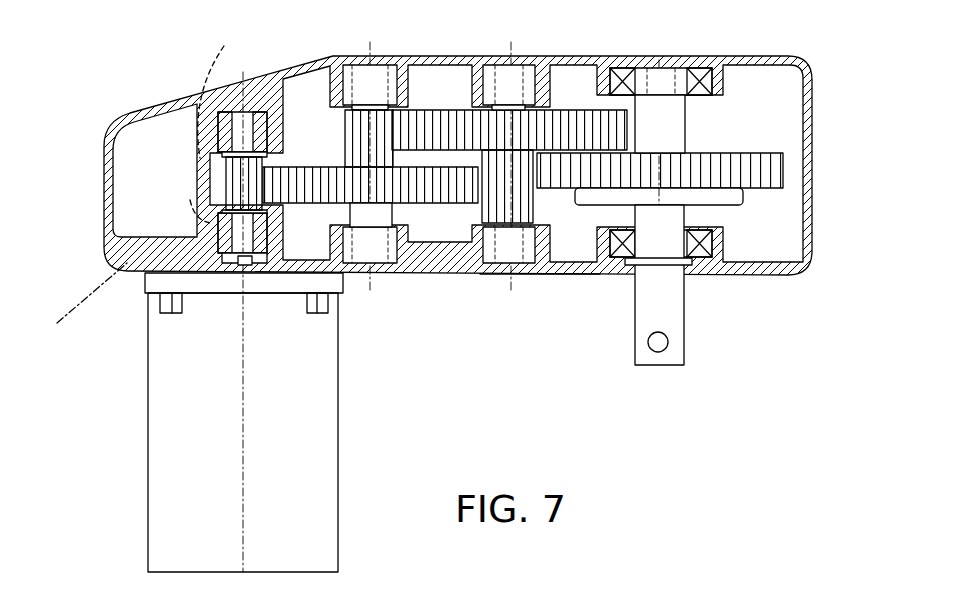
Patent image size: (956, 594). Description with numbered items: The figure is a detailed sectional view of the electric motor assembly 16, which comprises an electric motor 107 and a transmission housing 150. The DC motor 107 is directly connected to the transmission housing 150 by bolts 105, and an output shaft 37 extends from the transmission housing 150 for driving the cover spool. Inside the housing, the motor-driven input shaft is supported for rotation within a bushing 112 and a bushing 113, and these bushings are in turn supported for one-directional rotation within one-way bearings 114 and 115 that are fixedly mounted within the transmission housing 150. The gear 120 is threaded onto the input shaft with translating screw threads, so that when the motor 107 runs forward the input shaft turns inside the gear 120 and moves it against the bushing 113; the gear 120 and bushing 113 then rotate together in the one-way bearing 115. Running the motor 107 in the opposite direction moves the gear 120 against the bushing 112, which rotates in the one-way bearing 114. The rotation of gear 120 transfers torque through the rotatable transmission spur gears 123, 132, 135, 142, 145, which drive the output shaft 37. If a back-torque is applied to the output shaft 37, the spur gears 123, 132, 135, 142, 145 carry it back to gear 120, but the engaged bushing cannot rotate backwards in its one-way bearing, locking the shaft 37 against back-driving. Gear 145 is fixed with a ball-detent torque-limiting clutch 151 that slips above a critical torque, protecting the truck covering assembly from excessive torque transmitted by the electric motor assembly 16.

The electric motor assembly 16 is at (540, 297).
The output shaft 37 is at (670, 302).
The bolts 105 is at (170, 313).
The electric motor 107 is at (263, 383).
The bushing 112 is at (222, 228).
The bushing 113 is at (232, 130).
The one-way bearing 114 is at (220, 232).
The one-way bearing 115 is at (218, 90).
The gear 120 is at (262, 167).
The transmission spur gear 123 is at (310, 198).
The transmission spur gear 132 is at (338, 120).
The transmission spur gear 135 is at (430, 120).
The transmission spur gear 142 is at (487, 212).
The transmission spur gear 145 is at (712, 165).
The transmission housing 150 is at (810, 130).
The torque-limiting clutch 151 is at (697, 195).